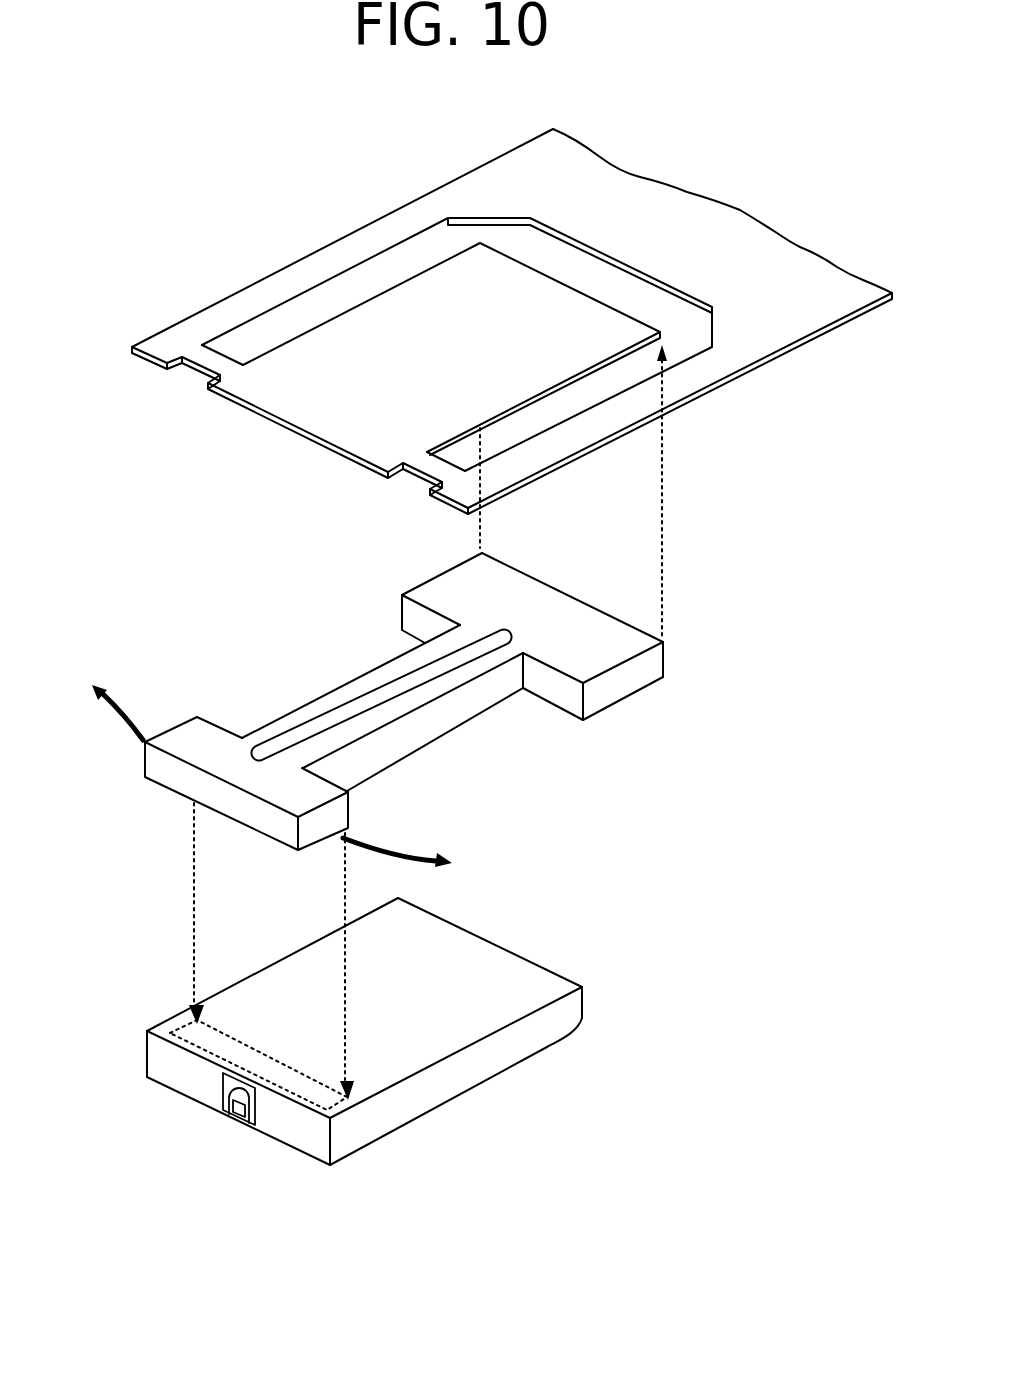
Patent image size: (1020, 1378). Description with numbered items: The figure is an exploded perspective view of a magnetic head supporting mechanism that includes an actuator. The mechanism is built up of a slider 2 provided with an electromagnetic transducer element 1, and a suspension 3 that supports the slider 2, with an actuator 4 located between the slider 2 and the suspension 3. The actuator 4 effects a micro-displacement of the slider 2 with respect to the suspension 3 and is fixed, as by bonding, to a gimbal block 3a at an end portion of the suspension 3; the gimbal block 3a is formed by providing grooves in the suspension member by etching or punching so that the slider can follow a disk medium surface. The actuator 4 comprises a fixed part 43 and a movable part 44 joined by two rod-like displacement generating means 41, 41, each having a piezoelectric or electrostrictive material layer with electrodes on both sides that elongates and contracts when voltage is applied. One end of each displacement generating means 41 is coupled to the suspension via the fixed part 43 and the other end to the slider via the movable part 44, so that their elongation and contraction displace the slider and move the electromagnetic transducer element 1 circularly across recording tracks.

The electromagnetic transducer element 1 is at (230, 1113).
The slider 2 is at (468, 952).
The suspension 3 is at (676, 192).
The gimbal block 3a is at (302, 348).
The actuator 4 is at (348, 693).
The displacement generating means 41 is at (360, 687).
The fixed part 43 is at (430, 595).
The movable part 44 is at (192, 733).